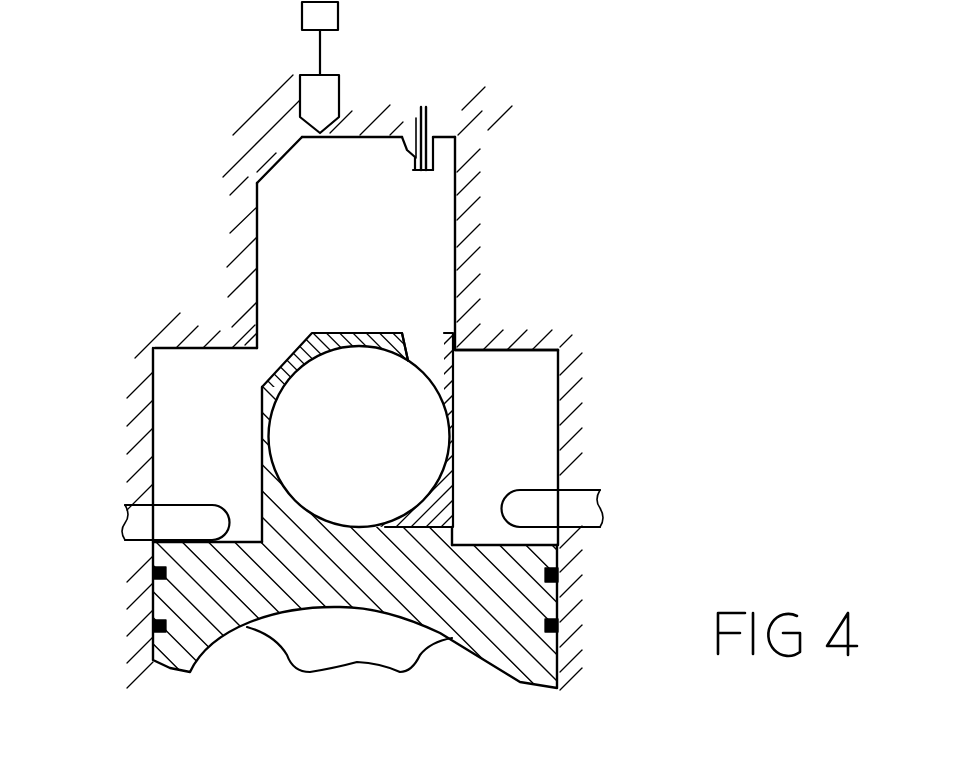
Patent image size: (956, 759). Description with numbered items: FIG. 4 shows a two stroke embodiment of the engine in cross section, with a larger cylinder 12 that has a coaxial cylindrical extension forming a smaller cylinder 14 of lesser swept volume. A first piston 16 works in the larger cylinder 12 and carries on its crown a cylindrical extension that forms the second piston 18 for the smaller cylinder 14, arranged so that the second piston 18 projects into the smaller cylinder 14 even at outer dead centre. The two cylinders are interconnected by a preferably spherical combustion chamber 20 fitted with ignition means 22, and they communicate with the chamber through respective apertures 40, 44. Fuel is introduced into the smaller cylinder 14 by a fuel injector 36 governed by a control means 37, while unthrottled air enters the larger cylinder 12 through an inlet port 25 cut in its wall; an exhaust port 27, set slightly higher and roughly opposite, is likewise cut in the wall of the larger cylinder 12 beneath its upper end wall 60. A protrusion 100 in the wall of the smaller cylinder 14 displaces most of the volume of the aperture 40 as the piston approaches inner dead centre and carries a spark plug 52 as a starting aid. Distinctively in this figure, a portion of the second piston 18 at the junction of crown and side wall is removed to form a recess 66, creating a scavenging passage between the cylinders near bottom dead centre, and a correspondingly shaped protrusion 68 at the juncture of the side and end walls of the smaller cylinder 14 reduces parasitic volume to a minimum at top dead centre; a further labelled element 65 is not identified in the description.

The larger cylinder 12 is at (510, 402).
The smaller cylinder 14 is at (277, 215).
The first piston 16 is at (523, 593).
The second piston 18 is at (273, 388).
The combustion chamber 20 is at (367, 430).
The ignition means 22 is at (272, 408).
The inlet port 25 is at (150, 520).
The exhaust port 27 is at (565, 517).
The fuel injector 36 is at (317, 95).
The control means 37 is at (318, 13).
The aperture 40 is at (422, 350).
The aperture 44 is at (450, 503).
The spark plug 52 is at (430, 112).
The upper end wall 60 is at (532, 350).
The housing wall section 65 is at (250, 338).
The recess 66 is at (295, 350).
The protrusion 68 is at (282, 162).
The protrusion 100 is at (433, 150).